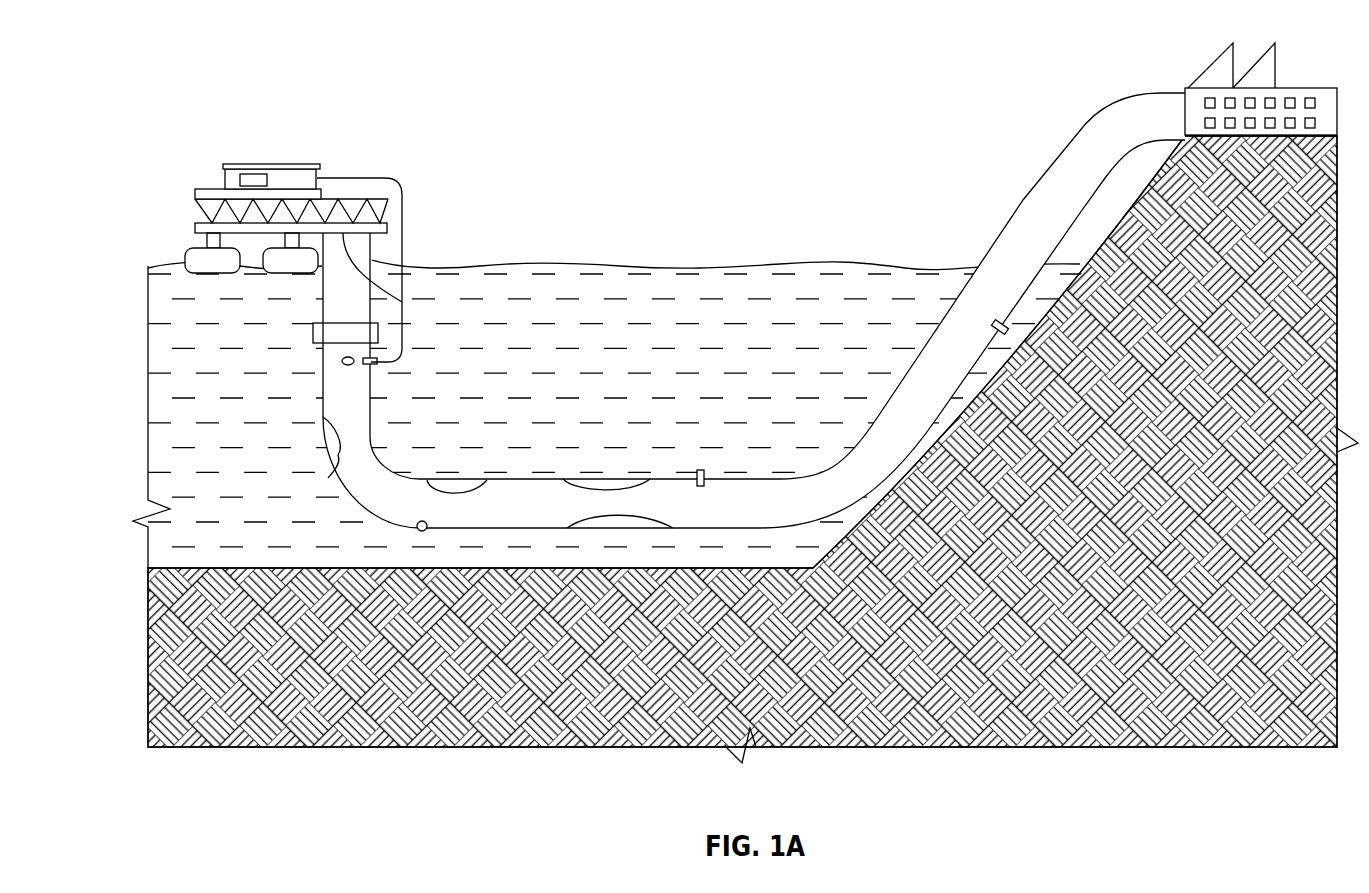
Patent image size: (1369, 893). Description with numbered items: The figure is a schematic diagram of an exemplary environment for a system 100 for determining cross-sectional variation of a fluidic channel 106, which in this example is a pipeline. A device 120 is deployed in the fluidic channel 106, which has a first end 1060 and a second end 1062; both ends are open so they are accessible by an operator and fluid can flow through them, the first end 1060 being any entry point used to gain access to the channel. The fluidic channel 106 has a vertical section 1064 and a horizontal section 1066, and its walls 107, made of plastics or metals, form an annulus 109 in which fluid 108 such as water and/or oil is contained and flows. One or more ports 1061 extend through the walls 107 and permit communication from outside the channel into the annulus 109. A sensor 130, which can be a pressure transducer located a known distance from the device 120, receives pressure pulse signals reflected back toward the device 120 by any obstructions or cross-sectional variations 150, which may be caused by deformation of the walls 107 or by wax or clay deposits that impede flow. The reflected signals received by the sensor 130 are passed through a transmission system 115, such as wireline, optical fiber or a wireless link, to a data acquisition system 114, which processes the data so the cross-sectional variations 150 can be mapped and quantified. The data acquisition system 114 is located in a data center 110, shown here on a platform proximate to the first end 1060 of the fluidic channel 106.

The system 100 is at (186, 92).
The data center 110 is at (273, 185).
The data acquisition system 114 is at (237, 180).
The transmission system 115 is at (403, 222).
The first end 1060 is at (403, 302).
The device 120 is at (313, 330).
The sensor 130 is at (342, 361).
The vertical section 1064 is at (378, 387).
The fluidic channel 106 is at (373, 433).
The port 1061 is at (363, 365).
The cross-sectional variations 150 is at (328, 450).
The horizontal section 1066 is at (572, 460).
The walls 107 is at (760, 472).
The fluid 108 is at (810, 481).
The annulus 109 is at (753, 517).
The second end 1062 is at (1176, 96).